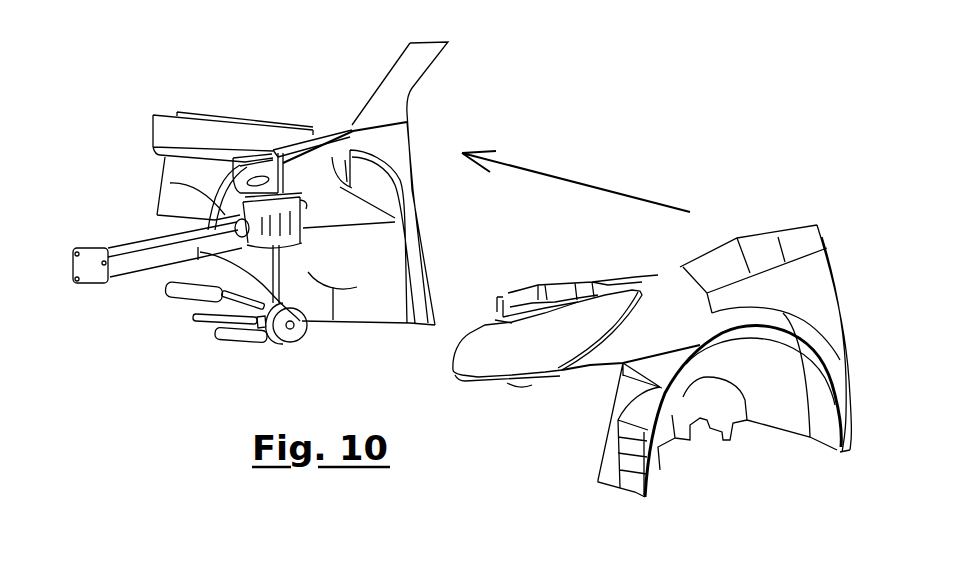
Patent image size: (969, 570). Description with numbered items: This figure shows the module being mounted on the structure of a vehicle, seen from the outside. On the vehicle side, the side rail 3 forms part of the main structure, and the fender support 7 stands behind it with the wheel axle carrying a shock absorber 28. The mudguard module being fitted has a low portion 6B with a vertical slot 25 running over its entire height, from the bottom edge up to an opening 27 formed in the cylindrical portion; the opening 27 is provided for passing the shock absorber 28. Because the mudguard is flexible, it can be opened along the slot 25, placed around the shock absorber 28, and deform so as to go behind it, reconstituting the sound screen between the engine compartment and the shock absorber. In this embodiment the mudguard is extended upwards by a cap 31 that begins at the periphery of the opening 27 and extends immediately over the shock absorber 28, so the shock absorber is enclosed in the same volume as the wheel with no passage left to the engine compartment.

The fender support 7 is at (336, 133).
The cap 31 is at (170, 183).
The side rail 3 is at (133, 258).
The shock absorber 28 is at (243, 342).
The opening 27 is at (807, 277).
The vertical slot 25 is at (723, 417).
The low portion 6B is at (668, 418).